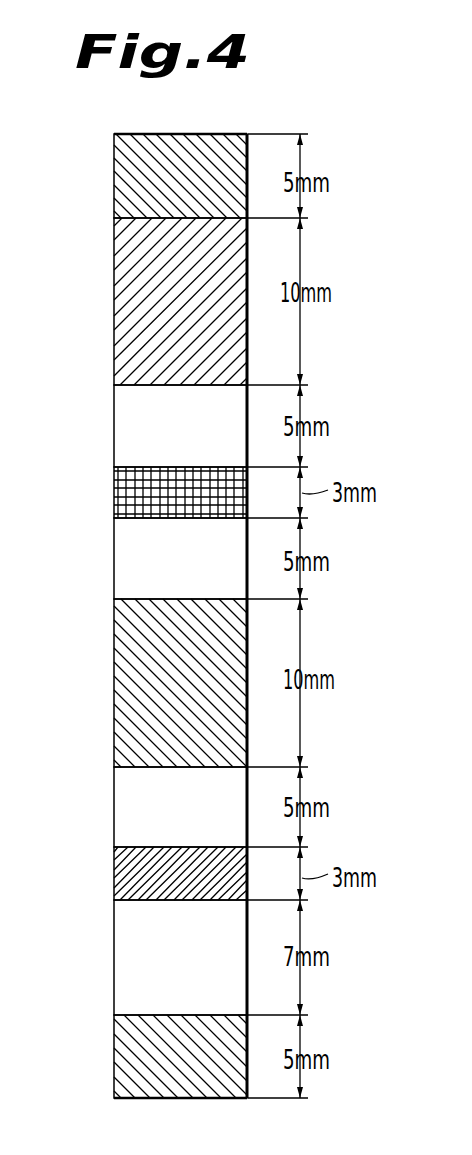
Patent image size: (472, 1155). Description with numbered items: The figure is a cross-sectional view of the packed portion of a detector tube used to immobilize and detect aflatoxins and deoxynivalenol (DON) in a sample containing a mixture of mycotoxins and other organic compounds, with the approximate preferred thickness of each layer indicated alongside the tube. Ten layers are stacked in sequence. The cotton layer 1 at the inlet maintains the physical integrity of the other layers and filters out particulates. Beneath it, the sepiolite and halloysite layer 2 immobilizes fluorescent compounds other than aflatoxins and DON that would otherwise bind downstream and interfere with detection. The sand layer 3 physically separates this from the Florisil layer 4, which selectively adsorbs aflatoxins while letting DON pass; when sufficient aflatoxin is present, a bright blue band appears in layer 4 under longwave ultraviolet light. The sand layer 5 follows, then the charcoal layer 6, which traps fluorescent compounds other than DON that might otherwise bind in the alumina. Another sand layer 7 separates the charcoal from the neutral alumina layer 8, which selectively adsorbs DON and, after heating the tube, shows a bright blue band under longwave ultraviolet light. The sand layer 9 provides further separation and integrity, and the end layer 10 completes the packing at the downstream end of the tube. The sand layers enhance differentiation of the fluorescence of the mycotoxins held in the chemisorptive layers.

The cotton layer 1 is at (110, 178).
The sepiolite and halloysite layer 2 is at (110, 323).
The sand layer 3 is at (110, 433).
The Florisil layer 4 is at (110, 493).
The sand layer 5 is at (110, 566).
The charcoal layer 6 is at (110, 688).
The sand layer 7 is at (110, 813).
The neutral alumina layer 8 is at (110, 873).
The sand layer 9 is at (110, 966).
The end layer 10 is at (110, 1062).